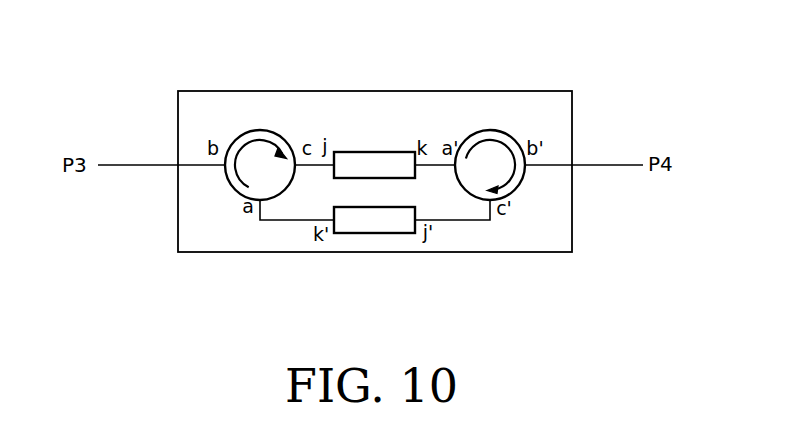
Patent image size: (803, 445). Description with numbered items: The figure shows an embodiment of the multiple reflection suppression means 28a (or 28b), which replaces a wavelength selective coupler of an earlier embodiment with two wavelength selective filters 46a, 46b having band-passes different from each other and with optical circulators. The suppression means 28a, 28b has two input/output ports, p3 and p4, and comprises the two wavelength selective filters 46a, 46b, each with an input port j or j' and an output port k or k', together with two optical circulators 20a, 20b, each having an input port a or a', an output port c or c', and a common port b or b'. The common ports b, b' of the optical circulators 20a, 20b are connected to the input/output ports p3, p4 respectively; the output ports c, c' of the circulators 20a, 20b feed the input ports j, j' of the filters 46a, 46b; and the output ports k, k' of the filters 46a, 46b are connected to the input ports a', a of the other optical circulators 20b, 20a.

The optical circulator 20a is at (260, 130).
The optical circulator 20b is at (490, 130).
The wavelength selective filter 46a is at (365, 152).
The wavelength selective filter 46b is at (385, 234).
The multiple reflection suppression means 28a is at (399, 141).
The multiple reflection suppression means 28b is at (530, 91).